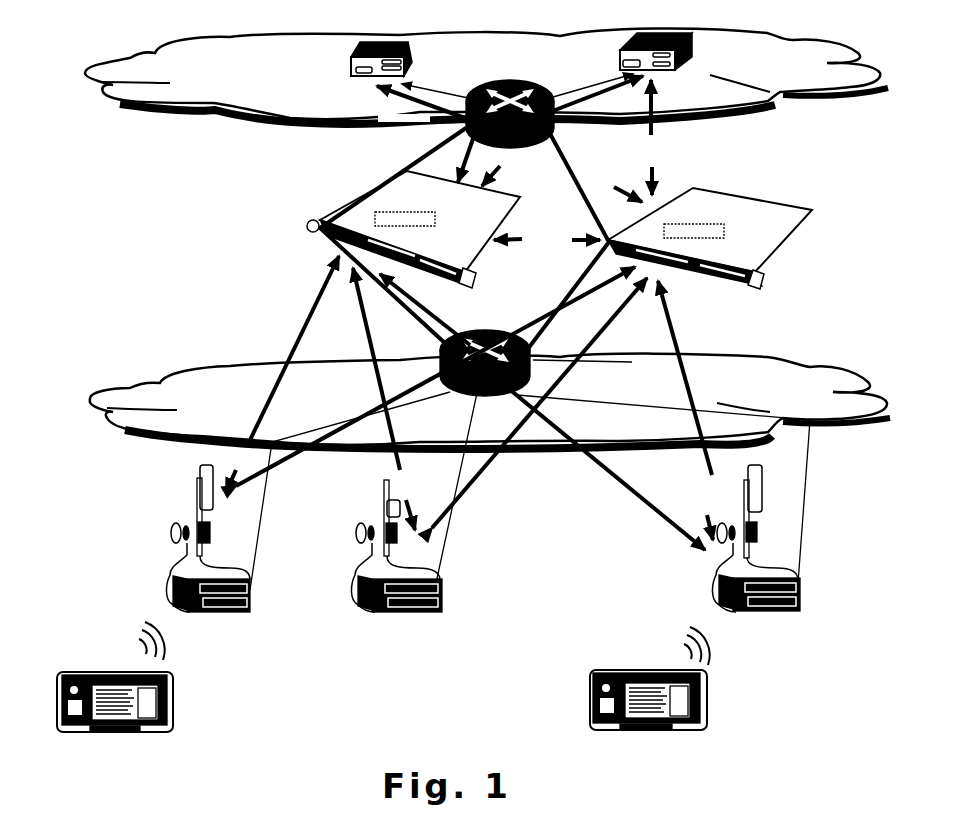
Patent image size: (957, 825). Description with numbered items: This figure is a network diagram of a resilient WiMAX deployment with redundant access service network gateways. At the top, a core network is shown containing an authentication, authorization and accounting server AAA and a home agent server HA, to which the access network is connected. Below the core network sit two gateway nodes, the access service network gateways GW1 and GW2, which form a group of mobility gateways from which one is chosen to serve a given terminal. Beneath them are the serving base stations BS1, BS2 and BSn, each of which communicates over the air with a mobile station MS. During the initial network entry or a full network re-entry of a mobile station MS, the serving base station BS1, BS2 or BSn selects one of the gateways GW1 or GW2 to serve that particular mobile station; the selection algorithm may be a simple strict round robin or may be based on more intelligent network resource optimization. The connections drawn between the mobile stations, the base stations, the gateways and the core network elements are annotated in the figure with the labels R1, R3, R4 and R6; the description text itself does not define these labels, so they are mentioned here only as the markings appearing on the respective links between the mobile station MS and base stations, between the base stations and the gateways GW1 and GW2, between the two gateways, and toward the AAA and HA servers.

The authentication, authorization and accounting server AAA is at (358, 59).
The home agent server HA is at (670, 51).
The access service network gateway GW1 is at (401, 229).
The access service network gateway GW2 is at (730, 238).
The base station BS1 is at (181, 538).
The base station BS2 is at (374, 546).
The base station BSn is at (730, 538).
The mobile station MS is at (366, 701).
The R1 air interface R1 is at (445, 644).
The R3 interface R3 is at (524, 138).
The R4 interface R4 is at (547, 245).
The R6 interface R6 is at (469, 403).